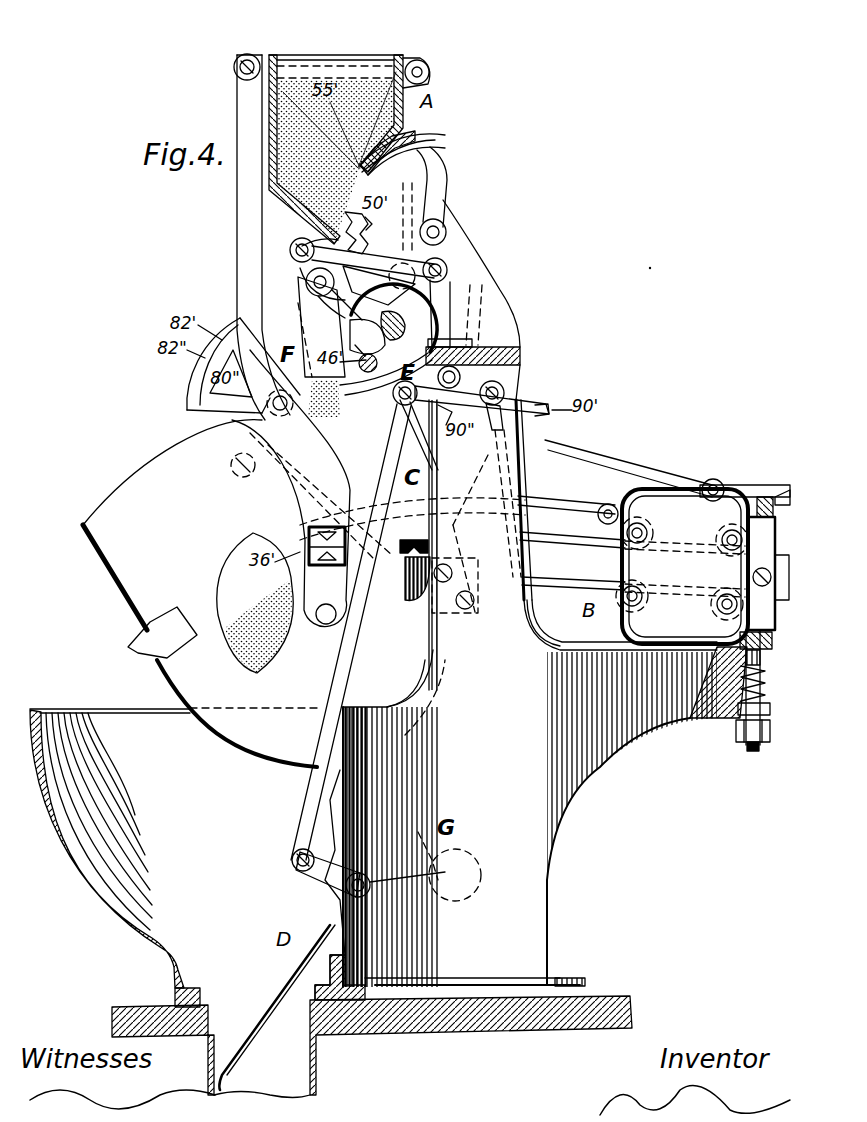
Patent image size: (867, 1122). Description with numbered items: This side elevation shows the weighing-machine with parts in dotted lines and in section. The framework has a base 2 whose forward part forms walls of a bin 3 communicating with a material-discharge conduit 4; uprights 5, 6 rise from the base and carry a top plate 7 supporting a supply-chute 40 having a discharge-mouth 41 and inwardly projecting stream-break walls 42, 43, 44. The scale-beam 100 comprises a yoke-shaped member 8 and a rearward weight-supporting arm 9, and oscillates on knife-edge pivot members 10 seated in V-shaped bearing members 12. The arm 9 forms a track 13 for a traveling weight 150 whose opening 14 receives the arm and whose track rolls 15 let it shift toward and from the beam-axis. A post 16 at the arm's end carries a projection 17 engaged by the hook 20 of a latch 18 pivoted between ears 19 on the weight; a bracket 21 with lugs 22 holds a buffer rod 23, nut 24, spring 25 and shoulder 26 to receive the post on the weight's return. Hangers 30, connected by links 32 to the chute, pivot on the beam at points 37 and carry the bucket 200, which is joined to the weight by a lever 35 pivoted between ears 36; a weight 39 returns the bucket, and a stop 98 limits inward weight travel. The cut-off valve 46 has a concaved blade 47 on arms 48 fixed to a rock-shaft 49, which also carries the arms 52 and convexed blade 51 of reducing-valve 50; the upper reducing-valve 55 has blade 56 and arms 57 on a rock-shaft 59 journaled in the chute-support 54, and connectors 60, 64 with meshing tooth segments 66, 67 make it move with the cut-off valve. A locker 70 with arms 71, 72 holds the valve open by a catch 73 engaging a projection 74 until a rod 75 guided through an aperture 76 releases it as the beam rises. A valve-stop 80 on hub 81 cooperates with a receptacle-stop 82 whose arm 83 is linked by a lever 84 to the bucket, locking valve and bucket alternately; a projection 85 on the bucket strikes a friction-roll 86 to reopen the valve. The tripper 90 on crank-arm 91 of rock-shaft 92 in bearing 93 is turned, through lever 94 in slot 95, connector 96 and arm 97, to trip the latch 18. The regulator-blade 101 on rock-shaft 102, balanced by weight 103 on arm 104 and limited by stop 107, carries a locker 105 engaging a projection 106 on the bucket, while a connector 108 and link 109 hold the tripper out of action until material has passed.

The base 2 is at (535, 975).
The bin 3 is at (113, 720).
The material-discharge conduit 4 is at (292, 1028).
The upright or side frame 5 is at (522, 428).
The upright or side frame 6 is at (538, 648).
The top plate 7 is at (505, 333).
The yoke-shaped member 8 is at (535, 552).
The weight-supporting arm 9 is at (580, 578).
The knife-edge pivot member 10 is at (404, 572).
The V-shaped bearing member 12 is at (428, 542).
The track 13 is at (528, 610).
The opening 14 is at (667, 593).
The track rolls or wheels 15 is at (720, 540).
The post or bar 16 is at (776, 540).
The projection 17 is at (775, 512).
The latch 18 is at (745, 485).
The ears 19 is at (718, 480).
The hook 20 is at (782, 490).
The arm or bracket 21 is at (665, 725).
The lugs 22 is at (768, 660).
The headed rod 23 is at (773, 640).
The nut 24 is at (736, 730).
The spring 25 is at (768, 692).
The shoulder 26 is at (765, 676).
The hanger 30 is at (298, 468).
The links or levers 32 is at (380, 56).
The lever 35 is at (530, 500).
The ears or projections 36 is at (608, 504).
The pivotal points 37 is at (322, 525).
The weight 39 is at (432, 720).
The supply-chute 40 is at (408, 128).
The discharge-mouth 41 is at (291, 488).
The stream-break wall 42 is at (366, 236).
The stream-break wall 43 is at (295, 215).
The stream-break wall 44 is at (372, 156).
The cut-off valve 46 is at (386, 374).
The valve plate or blade 47 is at (335, 398).
The valve-arms 48 is at (349, 333).
The rock-shaft 49 is at (318, 292).
The reducing-valve 50 is at (292, 247).
The valve plate or blade 51 is at (318, 245).
The valve-arms 52 is at (306, 278).
The chute-support 54 is at (447, 262).
The reducing-valve 55 is at (440, 140).
The valve plate or blade 56 is at (398, 156).
The valve-arms 57 is at (446, 185).
The rock-shaft 59 is at (440, 230).
The slotted link or lever 60 is at (408, 216).
The lever 64 is at (347, 304).
The rack or tooth segment 66 is at (382, 216).
The rack or tooth segment 67 is at (379, 285).
The locker 70 is at (480, 310).
The arm 71 is at (420, 268).
The arm 72 is at (389, 314).
The catch 73 is at (394, 321).
The projection 74 is at (374, 352).
The rod 75 is at (462, 375).
The aperture 76 is at (521, 352).
The stop 80 is at (268, 330).
The hub 81 is at (300, 296).
The stop 82 is at (200, 380).
The projecting arm 83 is at (240, 455).
The lever 84 is at (272, 500).
The projection 85 is at (356, 620).
The friction-roll 86 is at (360, 352).
The tripper 90 is at (535, 400).
The crank-arm 91 is at (490, 488).
The rock-shaft 92 is at (504, 390).
The bearing 93 is at (419, 435).
The lever 94 is at (445, 290).
The slot 95 is at (470, 338).
The lever 96 is at (412, 268).
The short arm 97 is at (318, 292).
The stop 98 is at (471, 586).
The scale-beam 100 is at (440, 520).
The regulator-blade 101 is at (277, 1007).
The rock-shaft 102 is at (368, 892).
The counterbalancing-weight 103 is at (480, 882).
The arm 104 is at (385, 888).
The locker or stop 105 is at (448, 848).
The stop or projection 106 is at (128, 648).
The stop 107 is at (345, 968).
The connector 108 is at (310, 790).
The link or lever 109 is at (320, 870).
The traveling weight 150 is at (665, 478).
The receptacle or bucket 200 is at (145, 585).